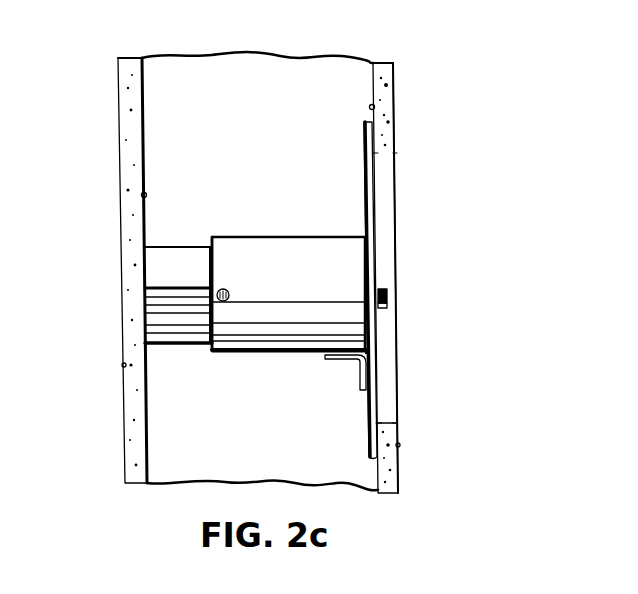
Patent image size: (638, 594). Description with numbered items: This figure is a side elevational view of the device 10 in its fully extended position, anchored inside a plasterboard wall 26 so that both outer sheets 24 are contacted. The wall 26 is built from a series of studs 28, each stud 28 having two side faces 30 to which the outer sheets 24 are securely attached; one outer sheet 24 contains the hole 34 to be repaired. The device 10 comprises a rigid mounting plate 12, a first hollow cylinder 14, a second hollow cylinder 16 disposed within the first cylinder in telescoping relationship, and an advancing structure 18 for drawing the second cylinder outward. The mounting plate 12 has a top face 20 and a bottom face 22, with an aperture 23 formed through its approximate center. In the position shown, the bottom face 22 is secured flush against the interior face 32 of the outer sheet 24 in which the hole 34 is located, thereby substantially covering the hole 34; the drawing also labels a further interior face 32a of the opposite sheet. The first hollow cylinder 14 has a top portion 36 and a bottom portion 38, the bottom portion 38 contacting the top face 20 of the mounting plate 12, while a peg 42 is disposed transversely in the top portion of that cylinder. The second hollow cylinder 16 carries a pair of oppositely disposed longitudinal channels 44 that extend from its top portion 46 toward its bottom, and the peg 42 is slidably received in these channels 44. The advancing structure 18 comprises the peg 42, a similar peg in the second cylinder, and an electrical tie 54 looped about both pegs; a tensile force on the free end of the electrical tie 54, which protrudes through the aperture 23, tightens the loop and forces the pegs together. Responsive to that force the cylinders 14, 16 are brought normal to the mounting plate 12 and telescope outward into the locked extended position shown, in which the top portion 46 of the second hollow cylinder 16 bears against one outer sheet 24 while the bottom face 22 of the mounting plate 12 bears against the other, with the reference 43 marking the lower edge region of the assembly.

The device 10 is at (320, 218).
The rigid mounting plate 12 is at (388, 137).
The first hollow cylinder 14 is at (278, 352).
The second hollow cylinder 16 is at (204, 344).
The advancing structure 18 is at (203, 240).
The top face 20 is at (363, 167).
The bottom face 22 is at (398, 430).
The aperture 23 is at (386, 290).
The outer sheet 24 is at (121, 160).
The wall 26 is at (252, 50).
The stud 28 is at (189, 86).
The side face 30 is at (140, 92).
The interior face 32 is at (142, 197).
The fastener 32a is at (124, 365).
The hole 34 is at (400, 184).
The top portion 36 is at (230, 356).
The bottom portion 38 is at (320, 358).
The peg 42 is at (226, 289).
The bottom edge 43 is at (369, 353).
The longitudinal channel 44 is at (188, 298).
The top portion 46 is at (170, 247).
The electrical tie 54 is at (387, 305).